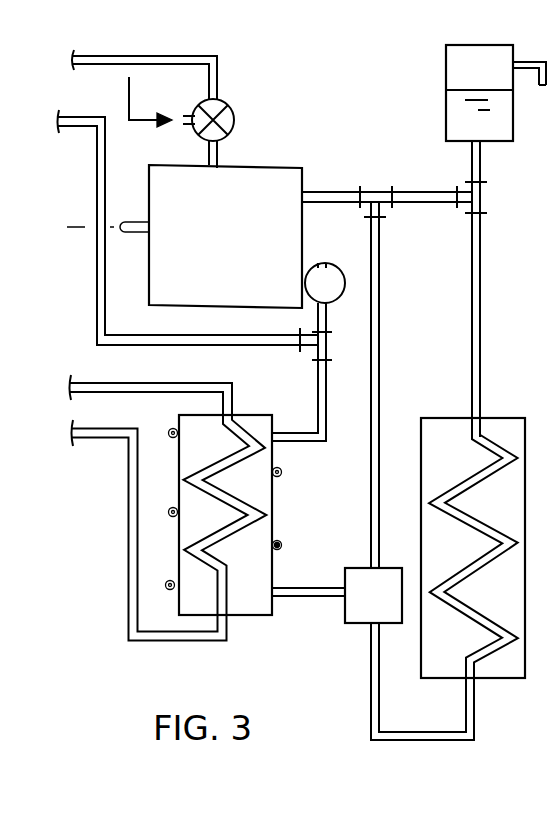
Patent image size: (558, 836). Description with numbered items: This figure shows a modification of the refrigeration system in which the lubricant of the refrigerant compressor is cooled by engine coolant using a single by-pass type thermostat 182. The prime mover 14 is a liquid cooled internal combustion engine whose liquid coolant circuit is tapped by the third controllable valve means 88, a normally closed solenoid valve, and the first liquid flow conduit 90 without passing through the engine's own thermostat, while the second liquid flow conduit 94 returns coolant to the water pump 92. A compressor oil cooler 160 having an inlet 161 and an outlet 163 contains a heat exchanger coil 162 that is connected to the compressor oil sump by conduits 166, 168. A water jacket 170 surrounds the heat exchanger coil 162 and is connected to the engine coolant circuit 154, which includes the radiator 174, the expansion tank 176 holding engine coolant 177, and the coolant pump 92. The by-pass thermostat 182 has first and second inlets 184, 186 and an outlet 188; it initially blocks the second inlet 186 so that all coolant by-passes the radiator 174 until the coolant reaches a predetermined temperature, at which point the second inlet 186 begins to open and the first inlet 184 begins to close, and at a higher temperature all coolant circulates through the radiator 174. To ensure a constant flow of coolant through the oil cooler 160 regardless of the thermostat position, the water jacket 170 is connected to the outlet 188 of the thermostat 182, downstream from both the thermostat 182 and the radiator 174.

The prime mover 14 is at (207, 250).
The third controllable valve means 88 is at (237, 118).
The first liquid flow conduit 90 is at (218, 57).
The water pump 92 is at (322, 263).
The second liquid flow conduit 94 is at (96, 192).
The engine coolant circuit 154 is at (405, 326).
The compressor oil cooler 160 is at (258, 616).
The inlet 161 is at (285, 586).
The heat exchanger coil 162 is at (197, 480).
The outlet 163 is at (283, 422).
The conduit 166 is at (90, 383).
The conduit 168 is at (127, 472).
The water jacket 170 is at (283, 475).
The radiator 174 is at (521, 418).
The expansion tank 176 is at (500, 289).
The engine coolant 177 is at (448, 88).
The thermostat 182 is at (345, 624).
The first inlet 184 is at (368, 566).
The second inlet 186 is at (388, 630).
The outlet 188 is at (338, 600).